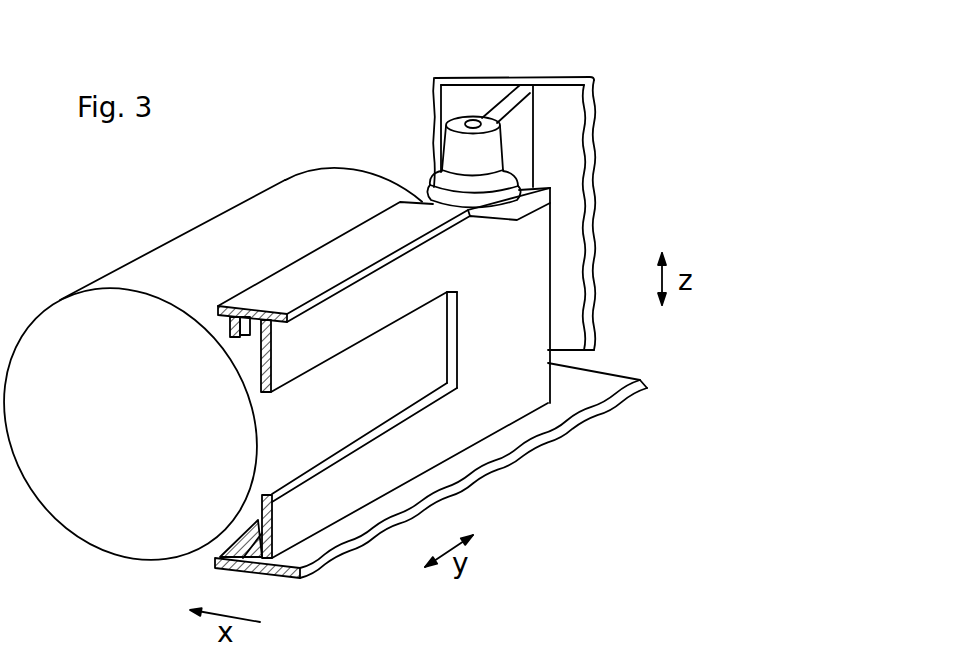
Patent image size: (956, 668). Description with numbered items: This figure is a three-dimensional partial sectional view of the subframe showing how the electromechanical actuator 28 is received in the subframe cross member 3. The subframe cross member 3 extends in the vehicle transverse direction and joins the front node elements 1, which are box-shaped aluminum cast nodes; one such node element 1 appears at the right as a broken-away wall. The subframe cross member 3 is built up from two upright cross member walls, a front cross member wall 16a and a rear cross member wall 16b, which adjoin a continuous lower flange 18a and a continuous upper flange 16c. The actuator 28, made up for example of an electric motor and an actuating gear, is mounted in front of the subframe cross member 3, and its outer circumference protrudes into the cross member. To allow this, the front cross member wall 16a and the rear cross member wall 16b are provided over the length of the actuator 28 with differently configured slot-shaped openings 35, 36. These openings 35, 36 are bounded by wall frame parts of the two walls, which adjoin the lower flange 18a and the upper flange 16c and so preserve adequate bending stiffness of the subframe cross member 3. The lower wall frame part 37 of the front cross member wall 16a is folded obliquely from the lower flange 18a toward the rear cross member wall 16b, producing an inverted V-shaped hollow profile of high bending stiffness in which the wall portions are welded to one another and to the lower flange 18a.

The front node element 1 is at (563, 72).
The subframe cross member 3 is at (292, 264).
The front cross member wall 16a is at (230, 322).
The rear cross member wall 16b is at (363, 312).
The upper flange 16c is at (349, 250).
The lower flange 18a is at (289, 582).
The electromechanical actuator 28 is at (166, 245).
The slot-shaped opening 35 is at (248, 314).
The slot-shaped opening 36 is at (437, 402).
The lower wall frame part 37 is at (250, 521).